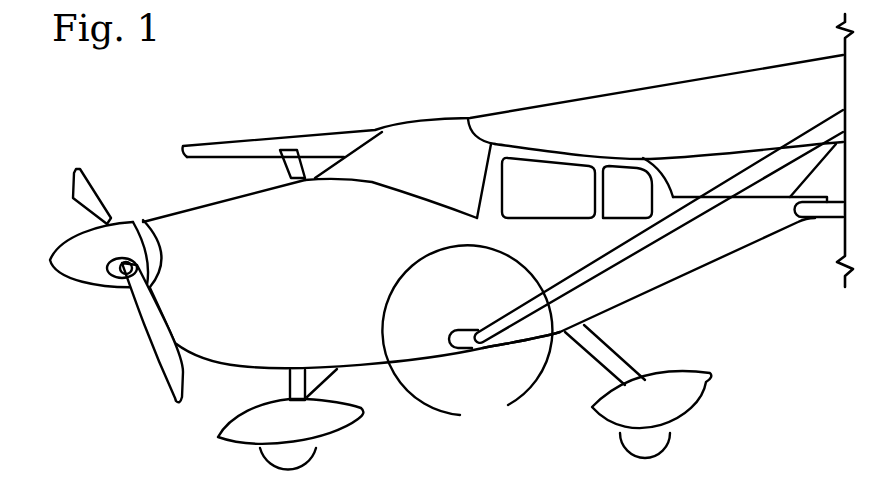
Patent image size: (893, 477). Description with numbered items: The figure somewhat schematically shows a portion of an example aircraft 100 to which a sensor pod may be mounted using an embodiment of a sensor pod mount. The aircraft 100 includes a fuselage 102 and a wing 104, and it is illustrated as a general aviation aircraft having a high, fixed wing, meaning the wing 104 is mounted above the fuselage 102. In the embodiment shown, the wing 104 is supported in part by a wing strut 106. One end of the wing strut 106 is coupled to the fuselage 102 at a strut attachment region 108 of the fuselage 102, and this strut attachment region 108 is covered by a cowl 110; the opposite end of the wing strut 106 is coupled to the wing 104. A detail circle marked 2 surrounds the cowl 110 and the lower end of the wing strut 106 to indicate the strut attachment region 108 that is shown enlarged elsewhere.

The aircraft 100 is at (578, 71).
The fuselage 102 is at (257, 317).
The wing 104 is at (767, 117).
The wing strut 106 is at (646, 241).
The strut attachment region 108 is at (489, 363).
The cowl 110 is at (468, 330).
The detail view circle (FIG. 2) 2 is at (467, 340).